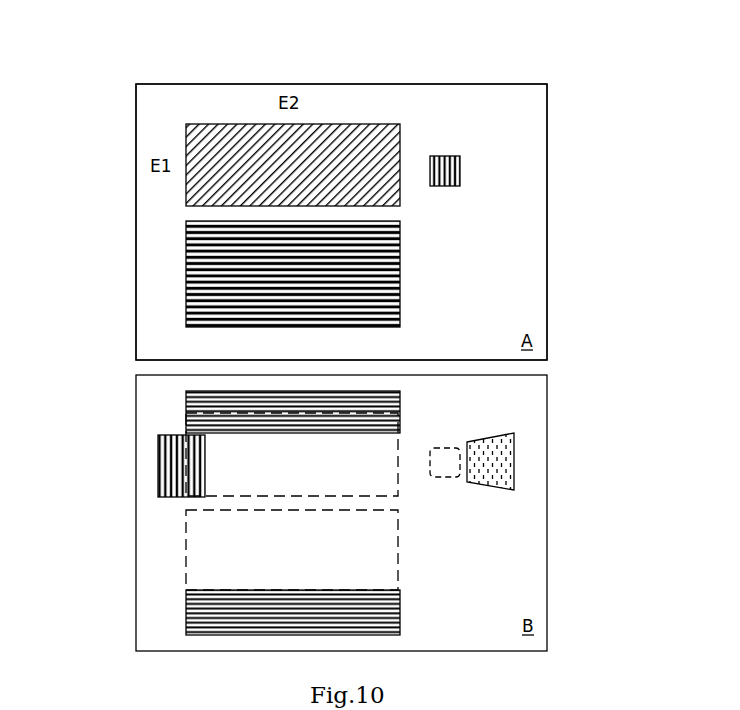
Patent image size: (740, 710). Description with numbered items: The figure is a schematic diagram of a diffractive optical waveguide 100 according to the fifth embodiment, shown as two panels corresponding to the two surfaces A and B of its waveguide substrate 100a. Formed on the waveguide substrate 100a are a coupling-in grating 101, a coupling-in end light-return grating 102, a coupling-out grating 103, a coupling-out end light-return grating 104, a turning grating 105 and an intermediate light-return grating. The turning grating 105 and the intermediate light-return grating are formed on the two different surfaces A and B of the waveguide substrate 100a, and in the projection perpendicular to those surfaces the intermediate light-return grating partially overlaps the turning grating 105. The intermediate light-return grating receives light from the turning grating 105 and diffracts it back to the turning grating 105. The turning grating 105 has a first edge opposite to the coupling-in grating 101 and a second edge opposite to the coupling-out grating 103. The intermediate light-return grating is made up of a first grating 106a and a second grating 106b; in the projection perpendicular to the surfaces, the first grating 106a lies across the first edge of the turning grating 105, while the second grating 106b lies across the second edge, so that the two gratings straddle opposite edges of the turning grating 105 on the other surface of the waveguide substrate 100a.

The diffractive optical waveguide 100 is at (330, 76).
The waveguide substrate 100a is at (547, 252).
The coupling-in grating 101 is at (445, 156).
The coupling-in end light-return grating 102 is at (516, 452).
The coupling-out grating 103 is at (401, 268).
The coupling-out end light-return grating 104 is at (186, 624).
The turning grating 105 is at (401, 192).
The first grating 106a is at (158, 467).
The second grating 106b is at (186, 405).